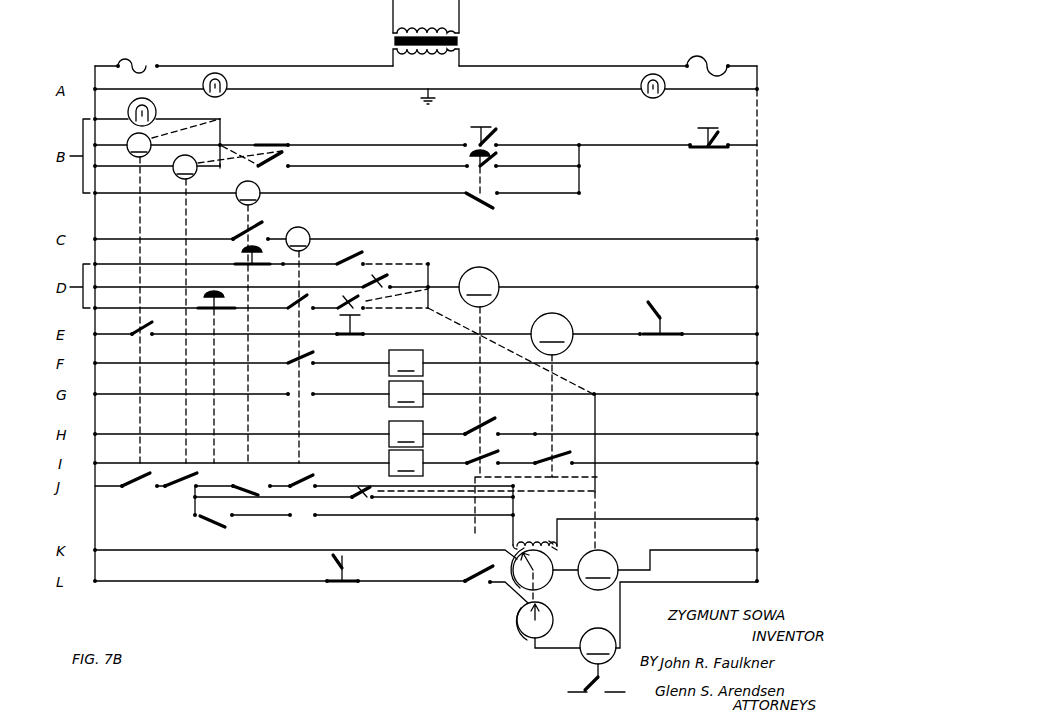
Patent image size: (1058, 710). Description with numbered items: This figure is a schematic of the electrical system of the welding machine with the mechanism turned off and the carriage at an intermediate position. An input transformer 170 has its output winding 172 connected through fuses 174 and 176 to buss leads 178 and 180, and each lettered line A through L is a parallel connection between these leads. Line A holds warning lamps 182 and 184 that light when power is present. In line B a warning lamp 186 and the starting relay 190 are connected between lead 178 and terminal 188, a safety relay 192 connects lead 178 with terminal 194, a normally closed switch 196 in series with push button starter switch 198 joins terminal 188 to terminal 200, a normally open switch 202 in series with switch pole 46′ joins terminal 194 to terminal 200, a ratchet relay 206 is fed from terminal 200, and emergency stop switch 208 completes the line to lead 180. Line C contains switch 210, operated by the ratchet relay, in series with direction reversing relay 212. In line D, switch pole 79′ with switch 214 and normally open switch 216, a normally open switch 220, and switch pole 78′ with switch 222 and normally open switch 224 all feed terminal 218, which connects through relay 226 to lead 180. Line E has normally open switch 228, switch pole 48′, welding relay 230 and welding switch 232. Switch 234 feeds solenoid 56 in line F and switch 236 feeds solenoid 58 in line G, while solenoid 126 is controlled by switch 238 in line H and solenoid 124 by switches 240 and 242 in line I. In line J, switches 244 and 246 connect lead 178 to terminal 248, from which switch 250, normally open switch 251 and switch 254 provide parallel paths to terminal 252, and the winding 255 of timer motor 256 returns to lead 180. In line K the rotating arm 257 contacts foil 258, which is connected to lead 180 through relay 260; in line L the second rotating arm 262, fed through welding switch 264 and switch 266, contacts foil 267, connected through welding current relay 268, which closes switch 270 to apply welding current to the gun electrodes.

The input transformer 170 is at (468, 37).
The output winding 172 is at (460, 54).
The fuse 174 is at (132, 58).
The fuse 176 is at (688, 58).
The buss lead 178 is at (95, 74).
The buss lead 180 is at (757, 78).
The warning lamp 182 is at (227, 83).
The warning lamp 184 is at (641, 82).
The warning lamp 186 is at (153, 104).
The terminal 188 is at (224, 142).
The starting relay 190 is at (157, 291).
The safety relay 192 is at (188, 304).
The terminal 194 is at (222, 170).
The normally closed switch 196 is at (272, 142).
The push button starter switch 198 is at (489, 133).
The terminal 200 is at (579, 140).
The normally open switch 202 is at (264, 163).
The ratchet relay 206 is at (280, 322).
The emergency stop switch 208 is at (719, 130).
The switch 210 is at (248, 222).
The direction reversing relay 212 is at (522, 345).
The switch 214 is at (301, 262).
The normally open switch 216 is at (350, 252).
The terminal 218 is at (455, 270).
The normally open switch 220 is at (362, 274).
The switch 222 is at (292, 304).
The normally open switch 224 is at (352, 306).
The relay 226 is at (609, 372).
The normally open switch 228 is at (138, 328).
The welding relay 230 is at (557, 425).
The welding switch 232 is at (664, 314).
The switch 234 is at (291, 360).
The switch 236 is at (306, 392).
The normally open switch 238 is at (470, 424).
The normally open switch 240 is at (470, 452).
The normally open switch 242 is at (553, 454).
The normally open switch 244 is at (138, 482).
The normally open switch 246 is at (196, 482).
The terminal 248 is at (186, 498).
The switch 250 is at (296, 483).
The normally open switch 251 is at (374, 488).
The terminal 252 is at (510, 514).
The switch 254 is at (299, 518).
The winding 255 is at (555, 538).
The timer motor 256 is at (549, 541).
The rotating arm 257 is at (552, 547).
The foil 258 is at (543, 590).
The relay 260 is at (668, 569).
The rotating arm 262 is at (522, 612).
The welding switch 264 is at (347, 569).
The normally open switch 266 is at (468, 573).
The foil 267 is at (522, 638).
The welding current relay 268 is at (669, 621).
The switch 270 is at (570, 685).
The solenoid 56 is at (574, 363).
The solenoid 58 is at (574, 465).
The solenoid 126 is at (280, 434).
The solenoid 124 is at (281, 463).
The switch pole 46′ is at (490, 160).
The switch pole 48′ is at (357, 323).
The switch pole 78′ is at (200, 300).
The switch pole 79′ is at (240, 254).